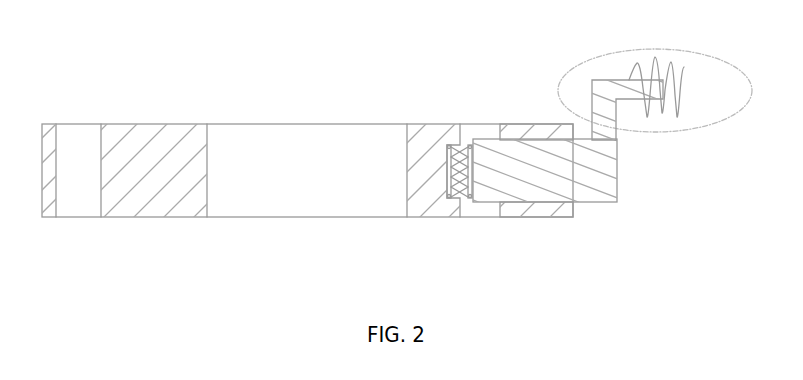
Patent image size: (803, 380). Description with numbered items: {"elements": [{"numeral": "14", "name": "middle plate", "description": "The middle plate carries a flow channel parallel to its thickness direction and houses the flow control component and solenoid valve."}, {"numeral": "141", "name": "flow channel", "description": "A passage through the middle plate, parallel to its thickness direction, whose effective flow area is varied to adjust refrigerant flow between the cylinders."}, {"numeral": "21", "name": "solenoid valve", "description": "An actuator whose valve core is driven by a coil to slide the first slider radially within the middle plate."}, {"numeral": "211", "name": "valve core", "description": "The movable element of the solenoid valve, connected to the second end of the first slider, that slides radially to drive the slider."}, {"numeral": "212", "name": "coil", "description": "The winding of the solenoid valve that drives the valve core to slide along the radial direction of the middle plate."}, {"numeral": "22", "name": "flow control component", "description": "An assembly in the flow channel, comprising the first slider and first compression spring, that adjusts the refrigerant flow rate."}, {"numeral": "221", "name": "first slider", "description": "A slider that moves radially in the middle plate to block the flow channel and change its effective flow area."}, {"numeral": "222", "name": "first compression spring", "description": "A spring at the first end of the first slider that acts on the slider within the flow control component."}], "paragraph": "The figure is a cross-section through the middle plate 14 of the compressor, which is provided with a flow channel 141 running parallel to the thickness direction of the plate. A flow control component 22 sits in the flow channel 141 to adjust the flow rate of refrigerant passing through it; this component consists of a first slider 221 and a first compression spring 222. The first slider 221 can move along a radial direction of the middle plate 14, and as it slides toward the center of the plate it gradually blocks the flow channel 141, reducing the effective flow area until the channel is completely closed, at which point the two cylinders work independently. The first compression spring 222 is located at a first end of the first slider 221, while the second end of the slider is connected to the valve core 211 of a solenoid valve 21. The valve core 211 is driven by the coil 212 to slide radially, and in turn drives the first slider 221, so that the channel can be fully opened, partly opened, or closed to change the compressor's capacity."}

The mounting bar 14 is at (165, 148).
The mounting groove 141 is at (478, 132).
The cleaning brush 21 is at (596, 95).
The brush holder 211 is at (626, 84).
The bristles 212 is at (657, 85).
The positioning assembly 22 is at (570, 180).
The positioning block 221 is at (502, 182).
The spring 222 is at (469, 198).